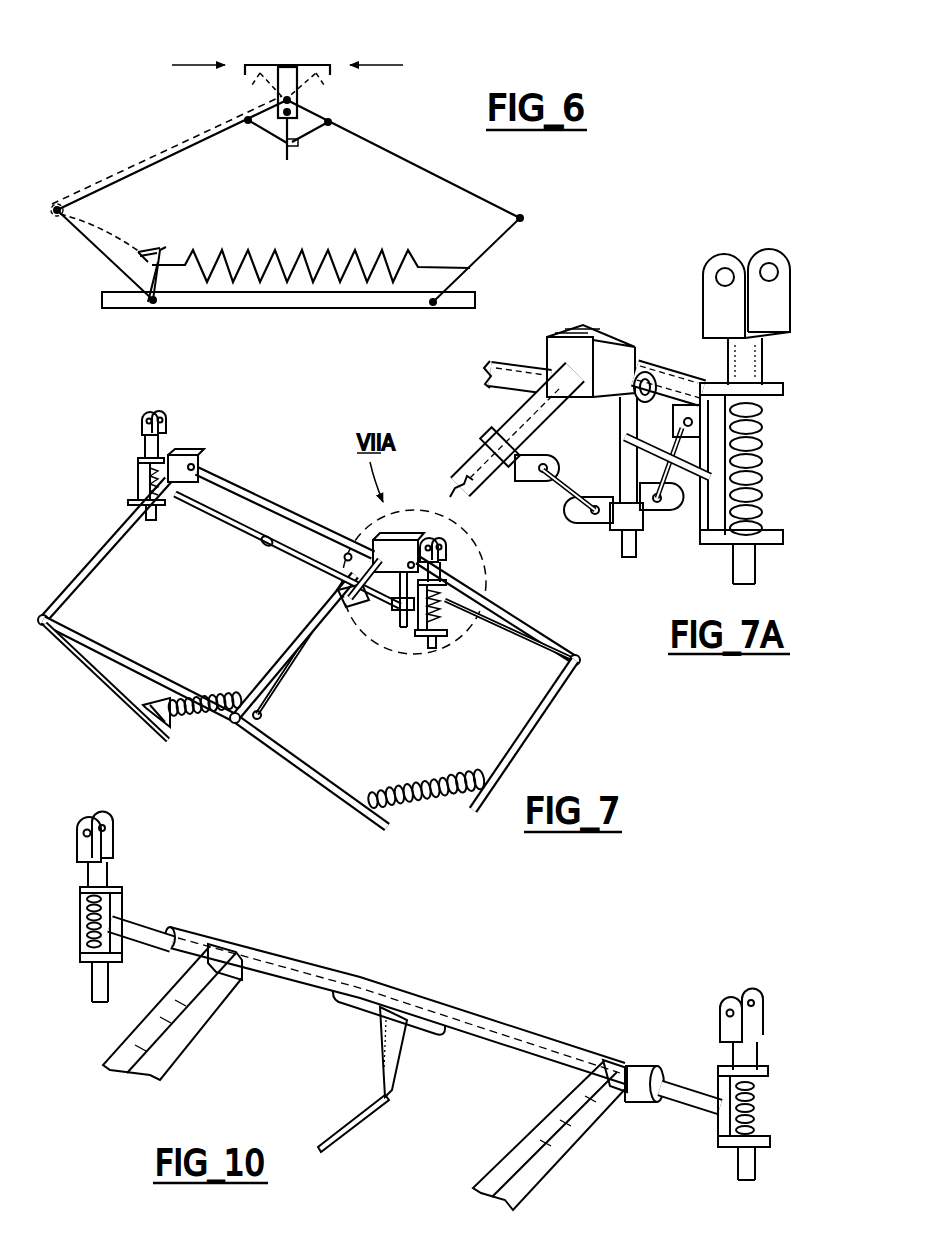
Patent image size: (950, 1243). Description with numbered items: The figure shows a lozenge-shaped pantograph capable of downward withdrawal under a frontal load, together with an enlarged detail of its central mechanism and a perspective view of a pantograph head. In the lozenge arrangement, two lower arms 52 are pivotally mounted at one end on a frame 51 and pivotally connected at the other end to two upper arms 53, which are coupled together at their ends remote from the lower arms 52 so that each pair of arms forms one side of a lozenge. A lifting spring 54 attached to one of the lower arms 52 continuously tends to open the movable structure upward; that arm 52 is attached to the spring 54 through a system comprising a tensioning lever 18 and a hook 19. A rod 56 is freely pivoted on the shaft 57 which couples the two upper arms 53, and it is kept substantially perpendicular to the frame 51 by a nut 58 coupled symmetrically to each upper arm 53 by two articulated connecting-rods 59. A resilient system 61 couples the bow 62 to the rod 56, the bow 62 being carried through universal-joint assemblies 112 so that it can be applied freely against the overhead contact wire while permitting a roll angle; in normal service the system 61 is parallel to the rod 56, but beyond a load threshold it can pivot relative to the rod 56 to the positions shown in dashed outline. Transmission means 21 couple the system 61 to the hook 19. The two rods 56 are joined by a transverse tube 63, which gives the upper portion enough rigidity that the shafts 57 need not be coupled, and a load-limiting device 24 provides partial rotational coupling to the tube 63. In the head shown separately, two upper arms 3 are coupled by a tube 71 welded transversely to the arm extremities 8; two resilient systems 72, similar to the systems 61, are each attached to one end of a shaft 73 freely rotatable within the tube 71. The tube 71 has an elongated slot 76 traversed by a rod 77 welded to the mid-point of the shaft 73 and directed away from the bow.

In FIG. 10, the upper arm 3 is at (173, 1037).
In FIG. 10, the arm extremity 8 is at (233, 967).
In FIG. 6, the tensioning lever 18 is at (158, 300).
In FIG. 7, the tensioning lever 18 is at (172, 734).
In FIG. 6, the hook 19 is at (147, 247).
In FIG. 6, the transmission means 21 is at (112, 170).
In FIG. 7, the load-limiting device 24 is at (252, 542).
In FIG. 6, the frame 51 is at (315, 302).
In FIG. 6, the lower arm 52 is at (96, 246).
In FIG. 7, the lower arm 52 is at (310, 622).
In FIG. 6, the upper arm 53 is at (168, 158).
In FIG. 7A, the upper arm 53 is at (520, 367).
In FIG. 7, the upper arm 53 is at (96, 556).
In FIG. 6, the lifting spring 54 is at (310, 252).
In FIG. 7, the lifting spring 54 is at (210, 694).
In FIG. 6, the rod 56 is at (289, 156).
In FIG. 7A, the rod 56 is at (637, 555).
In FIG. 7, the rod 56 is at (403, 599).
In FIG. 6, the shaft 57 is at (287, 102).
In FIG. 6, the nut 58 is at (298, 145).
In FIG. 7A, the nut 58 is at (648, 372).
In FIG. 7, the nut 58 is at (180, 454).
In FIG. 6, the articulated connecting-rod 59 is at (263, 130).
In FIG. 7A, the articulated connecting-rod 59 is at (676, 452).
In FIG. 7, the articulated connecting-rod 59 is at (382, 628).
In FIG. 6, the resilient system 61 is at (293, 72).
In FIG. 7A, the resilient system 61 is at (762, 458).
In FIG. 7, the resilient system 61 is at (138, 474).
In FIG. 6, the bow 62 is at (258, 65).
In FIG. 7, the tube 63 is at (317, 562).
In FIG. 10, the tube 71 is at (518, 1027).
In FIG. 10, the resilient system 72 is at (133, 880).
In FIG. 10, the shaft 73 is at (155, 927).
In FIG. 10, the elongated slot 76 is at (402, 997).
In FIG. 10, the rod 77 is at (390, 1063).
In FIG. 7A, the universal-joint assembly 112 is at (720, 272).
In FIG. 7, the universal-joint assembly 112 is at (146, 420).
In FIG. 10, the universal-joint assembly 112 is at (87, 822).